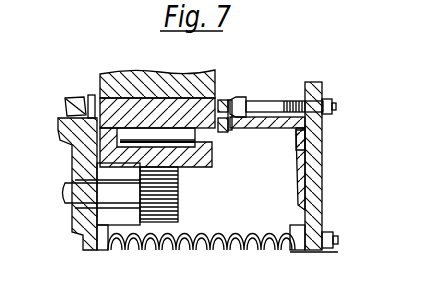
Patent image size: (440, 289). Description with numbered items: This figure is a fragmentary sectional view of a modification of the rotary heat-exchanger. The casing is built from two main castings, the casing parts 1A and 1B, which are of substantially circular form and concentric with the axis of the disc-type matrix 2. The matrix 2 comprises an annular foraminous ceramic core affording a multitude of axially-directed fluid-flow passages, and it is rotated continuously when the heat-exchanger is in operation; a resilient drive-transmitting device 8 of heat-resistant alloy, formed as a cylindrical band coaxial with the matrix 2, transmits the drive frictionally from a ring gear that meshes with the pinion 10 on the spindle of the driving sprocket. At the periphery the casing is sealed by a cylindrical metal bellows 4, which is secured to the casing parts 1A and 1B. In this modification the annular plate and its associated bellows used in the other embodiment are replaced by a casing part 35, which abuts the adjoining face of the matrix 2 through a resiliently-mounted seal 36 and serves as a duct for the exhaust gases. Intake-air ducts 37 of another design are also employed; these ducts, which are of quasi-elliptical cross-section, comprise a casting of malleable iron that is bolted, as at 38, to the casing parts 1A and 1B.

The matrix 2 is at (150, 78).
The resilient drive-transmitting device 8 is at (160, 143).
The casing part 1B is at (72, 160).
The pinion 10 is at (168, 192).
The cylindrical metal bellows 4 is at (215, 235).
The casing part 1A is at (312, 156).
The casing part 35 is at (298, 126).
The resiliently-mounted seal 36 is at (222, 132).
The intake-air duct 37 is at (254, 100).
The bolt 38 is at (333, 104).